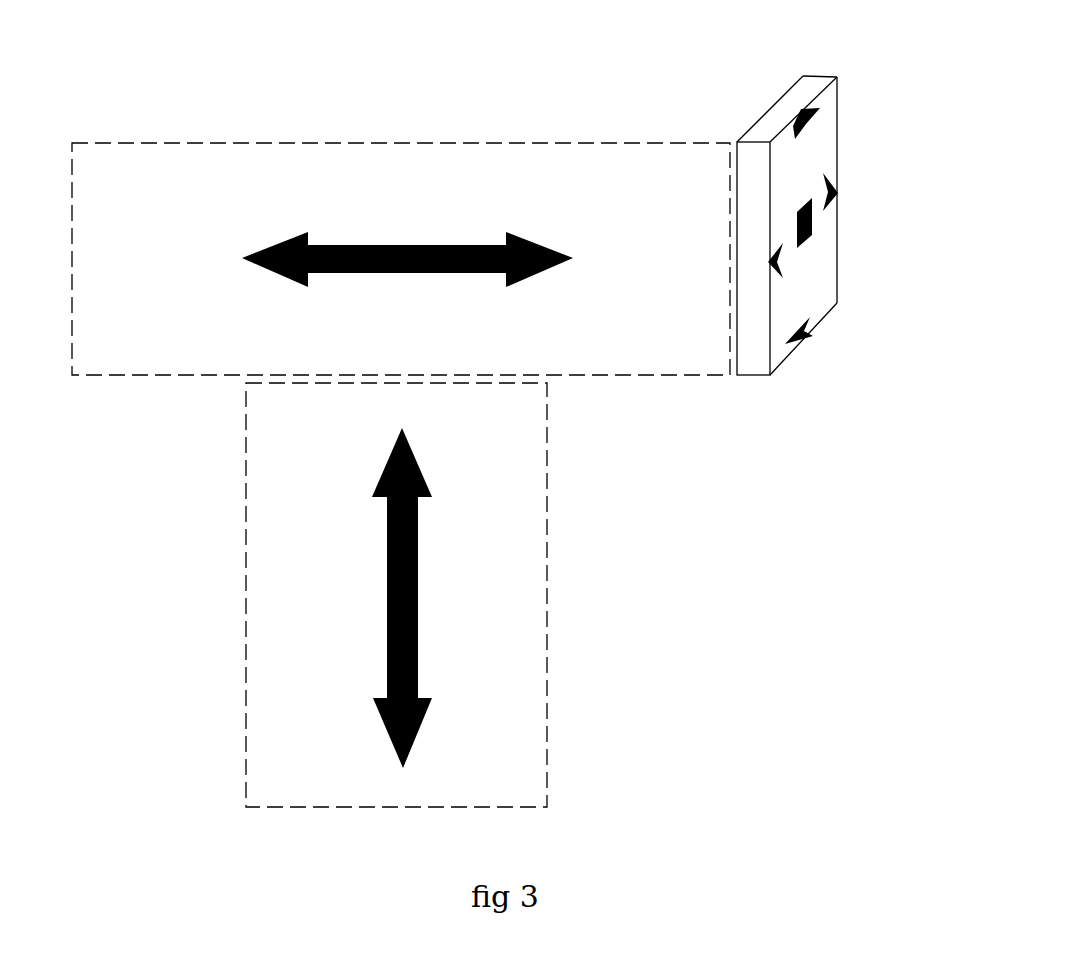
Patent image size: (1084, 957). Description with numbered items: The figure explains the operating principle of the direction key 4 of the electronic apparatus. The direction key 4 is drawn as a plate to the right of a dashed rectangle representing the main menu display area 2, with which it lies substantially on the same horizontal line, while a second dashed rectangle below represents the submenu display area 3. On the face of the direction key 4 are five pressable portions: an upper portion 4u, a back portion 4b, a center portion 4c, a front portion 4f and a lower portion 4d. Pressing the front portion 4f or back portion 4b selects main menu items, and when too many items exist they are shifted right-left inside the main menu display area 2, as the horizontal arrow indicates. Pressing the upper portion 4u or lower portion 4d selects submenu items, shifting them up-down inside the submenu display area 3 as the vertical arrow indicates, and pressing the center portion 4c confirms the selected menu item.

The main menu display area 2 is at (428, 135).
The submenu display area 3 is at (556, 606).
The direction key 4 is at (734, 108).
The upper portion 4u is at (813, 120).
The back portion 4b is at (835, 192).
The center portion 4c is at (812, 223).
The front portion 4f is at (779, 262).
The lower portion 4d is at (808, 337).